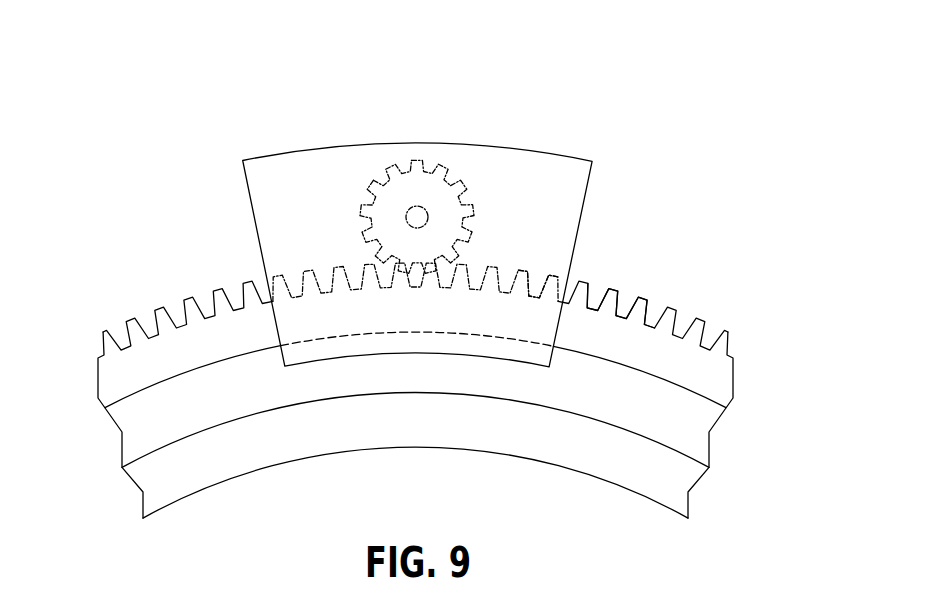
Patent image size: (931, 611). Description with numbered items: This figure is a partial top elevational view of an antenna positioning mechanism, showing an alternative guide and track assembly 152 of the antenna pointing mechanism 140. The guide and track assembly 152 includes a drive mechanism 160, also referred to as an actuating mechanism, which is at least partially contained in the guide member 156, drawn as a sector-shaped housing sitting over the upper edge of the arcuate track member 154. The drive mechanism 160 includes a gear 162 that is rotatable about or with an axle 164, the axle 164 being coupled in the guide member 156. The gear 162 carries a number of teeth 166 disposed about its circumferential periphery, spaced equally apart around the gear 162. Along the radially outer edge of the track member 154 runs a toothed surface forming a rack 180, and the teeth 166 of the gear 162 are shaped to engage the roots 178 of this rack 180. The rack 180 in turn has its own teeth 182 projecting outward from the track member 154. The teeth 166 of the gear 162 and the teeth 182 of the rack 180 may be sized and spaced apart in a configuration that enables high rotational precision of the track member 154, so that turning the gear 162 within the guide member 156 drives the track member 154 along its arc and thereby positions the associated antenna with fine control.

The antenna pointing mechanism 140 is at (659, 126).
The guide and track assembly 152 is at (743, 181).
The track member 154 is at (716, 306).
The guide member 156 is at (252, 210).
The drive mechanism 160 is at (474, 190).
The gear 162 is at (394, 185).
The axle 164 is at (414, 205).
The teeth 166 is at (362, 200).
The roots 178 is at (535, 272).
The rack 180 is at (601, 278).
The teeth 182 is at (643, 308).